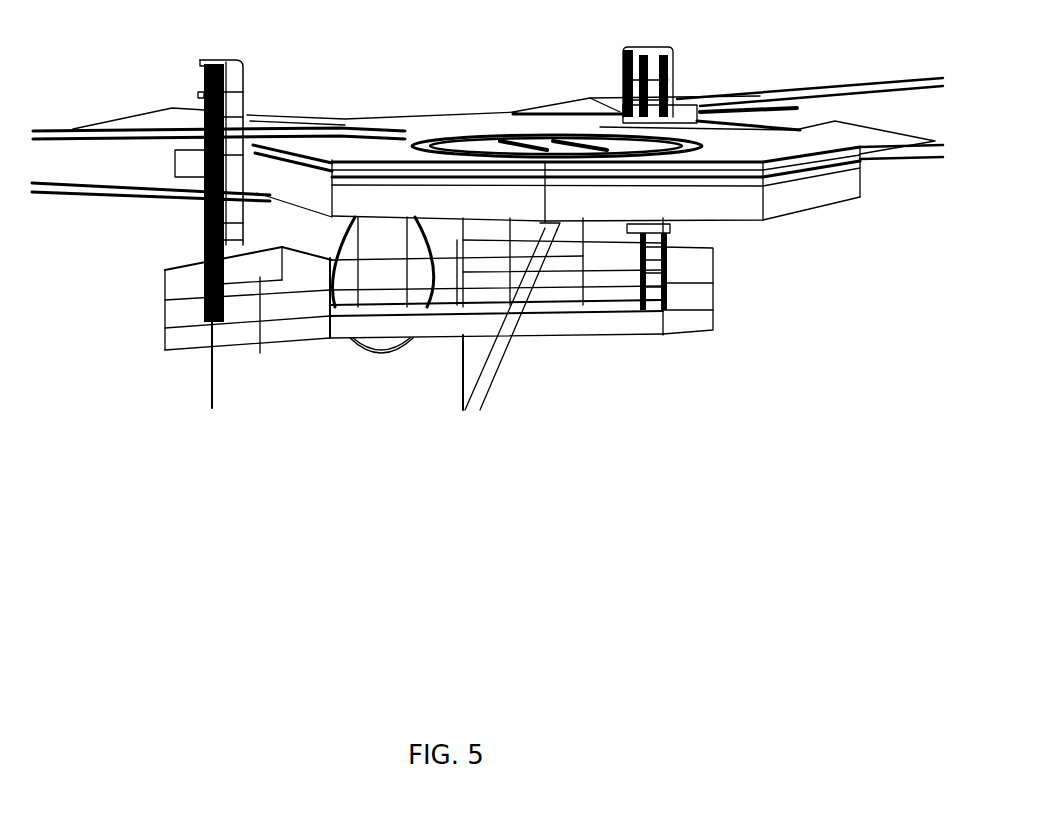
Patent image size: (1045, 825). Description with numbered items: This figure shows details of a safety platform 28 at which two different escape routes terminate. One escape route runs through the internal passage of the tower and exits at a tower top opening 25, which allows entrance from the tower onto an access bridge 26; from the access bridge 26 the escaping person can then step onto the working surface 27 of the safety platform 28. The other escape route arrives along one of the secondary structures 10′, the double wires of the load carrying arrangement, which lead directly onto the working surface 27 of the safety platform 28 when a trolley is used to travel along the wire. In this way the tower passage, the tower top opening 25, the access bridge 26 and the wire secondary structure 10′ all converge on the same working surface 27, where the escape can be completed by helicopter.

The secondary structure 10′ is at (60, 132).
The tower top opening 25 is at (383, 353).
The access bridge 26 is at (640, 333).
The working surface 27 is at (442, 133).
The safety platform 28 is at (805, 198).